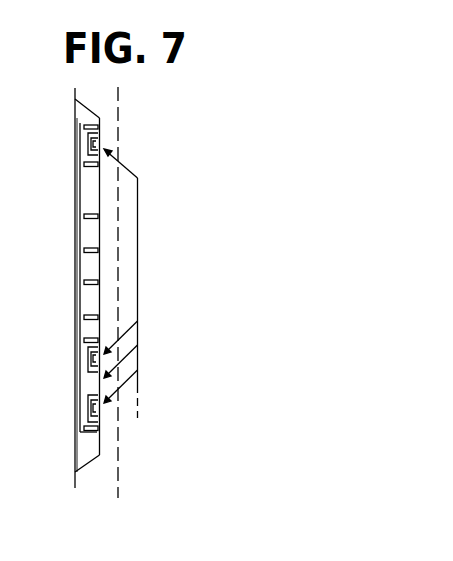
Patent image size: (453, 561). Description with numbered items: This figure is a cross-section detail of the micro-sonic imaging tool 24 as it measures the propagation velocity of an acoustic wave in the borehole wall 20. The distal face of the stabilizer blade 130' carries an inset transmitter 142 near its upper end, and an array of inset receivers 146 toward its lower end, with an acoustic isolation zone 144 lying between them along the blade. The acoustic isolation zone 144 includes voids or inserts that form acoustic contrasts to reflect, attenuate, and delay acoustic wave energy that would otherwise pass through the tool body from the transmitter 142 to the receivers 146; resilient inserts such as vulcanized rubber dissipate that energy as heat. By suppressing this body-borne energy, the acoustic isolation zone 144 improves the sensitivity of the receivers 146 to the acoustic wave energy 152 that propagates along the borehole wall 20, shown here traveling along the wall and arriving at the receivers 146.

The micro-sonic imaging tool 24 is at (75, 97).
The borehole wall 20 is at (118, 129).
The inset transmitter 142 is at (93, 150).
The acoustic isolation zone 144 is at (85, 167).
The inset receivers 146 is at (94, 362).
The acoustic wave energy 152 is at (130, 172).
The stabilizer blade 130' is at (130, 469).